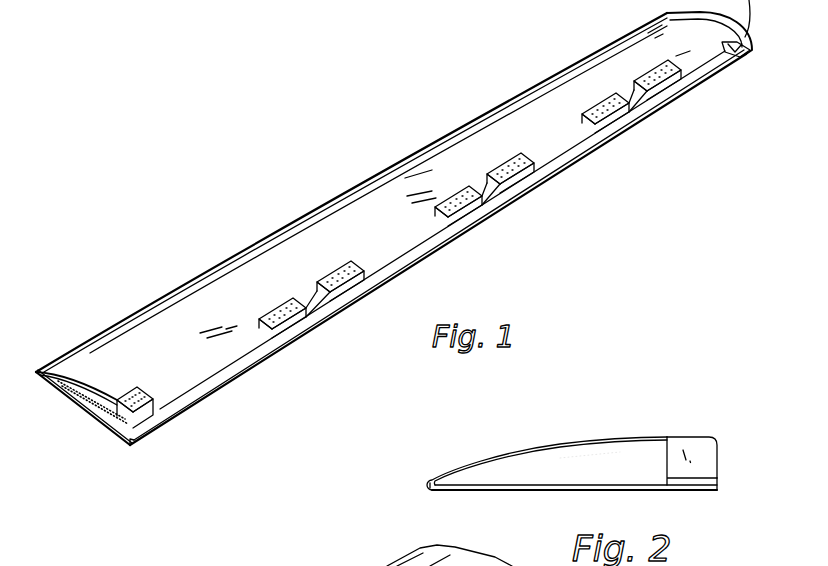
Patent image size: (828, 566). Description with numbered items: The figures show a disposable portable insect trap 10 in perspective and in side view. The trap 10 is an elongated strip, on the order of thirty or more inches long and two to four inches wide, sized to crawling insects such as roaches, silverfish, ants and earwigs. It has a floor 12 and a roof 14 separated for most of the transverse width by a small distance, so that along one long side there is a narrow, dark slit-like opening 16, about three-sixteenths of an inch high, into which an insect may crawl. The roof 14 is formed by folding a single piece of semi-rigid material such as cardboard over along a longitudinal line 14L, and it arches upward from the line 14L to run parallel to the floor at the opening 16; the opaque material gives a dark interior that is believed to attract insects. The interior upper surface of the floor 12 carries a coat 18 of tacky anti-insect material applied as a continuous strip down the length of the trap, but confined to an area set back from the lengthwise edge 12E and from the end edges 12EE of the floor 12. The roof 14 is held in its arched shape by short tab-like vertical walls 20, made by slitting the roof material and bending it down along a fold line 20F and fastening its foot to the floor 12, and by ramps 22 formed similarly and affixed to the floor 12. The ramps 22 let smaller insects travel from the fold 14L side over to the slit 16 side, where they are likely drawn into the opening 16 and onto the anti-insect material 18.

In FIG. 1, the insect trap 10 is at (284, 232).
In FIG. 2, the insect trap 10 is at (580, 432).
In FIG. 1, the floor 12 is at (141, 438).
In FIG. 2, the floor 12 is at (500, 488).
In FIG. 1, the lengthwise edge of the floor 12E is at (248, 374).
In FIG. 2, the lengthwise edge of the floor 12E is at (717, 487).
In FIG. 1, the end edges of the floor 12EE is at (103, 428).
In FIG. 2, the end edges of the floor 12EE is at (657, 486).
In FIG. 1, the roof 14 is at (73, 404).
In FIG. 2, the roof 14 is at (623, 437).
In FIG. 1, the longitudinal line 14L is at (88, 340).
In FIG. 2, the longitudinal line 14L is at (421, 485).
In FIG. 1, the slit-like opening 16 is at (214, 391).
In FIG. 2, the slit-like opening 16 is at (722, 458).
In FIG. 1, the coat of anti-insect material 18 is at (88, 406).
In FIG. 2, the coat of anti-insect material 18 is at (581, 477).
In FIG. 1, the tab-like vertical walls 20 is at (150, 428).
In FIG. 2, the tab-like vertical walls 20 is at (703, 452).
In FIG. 2, the fold line 20F is at (697, 437).
In FIG. 1, the ramps 22 is at (326, 314).